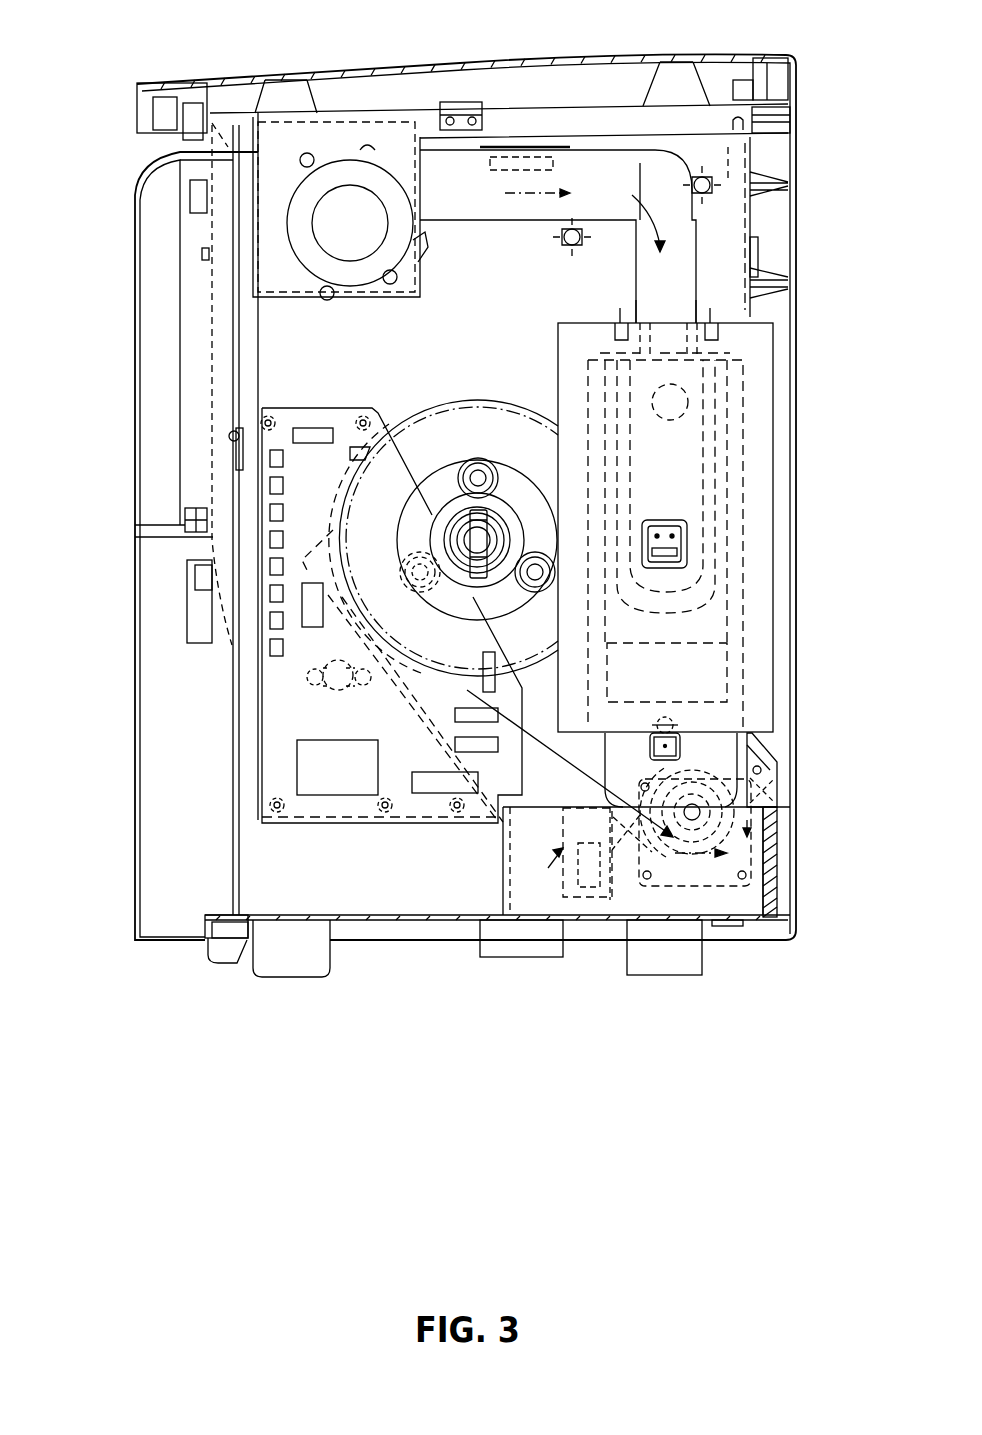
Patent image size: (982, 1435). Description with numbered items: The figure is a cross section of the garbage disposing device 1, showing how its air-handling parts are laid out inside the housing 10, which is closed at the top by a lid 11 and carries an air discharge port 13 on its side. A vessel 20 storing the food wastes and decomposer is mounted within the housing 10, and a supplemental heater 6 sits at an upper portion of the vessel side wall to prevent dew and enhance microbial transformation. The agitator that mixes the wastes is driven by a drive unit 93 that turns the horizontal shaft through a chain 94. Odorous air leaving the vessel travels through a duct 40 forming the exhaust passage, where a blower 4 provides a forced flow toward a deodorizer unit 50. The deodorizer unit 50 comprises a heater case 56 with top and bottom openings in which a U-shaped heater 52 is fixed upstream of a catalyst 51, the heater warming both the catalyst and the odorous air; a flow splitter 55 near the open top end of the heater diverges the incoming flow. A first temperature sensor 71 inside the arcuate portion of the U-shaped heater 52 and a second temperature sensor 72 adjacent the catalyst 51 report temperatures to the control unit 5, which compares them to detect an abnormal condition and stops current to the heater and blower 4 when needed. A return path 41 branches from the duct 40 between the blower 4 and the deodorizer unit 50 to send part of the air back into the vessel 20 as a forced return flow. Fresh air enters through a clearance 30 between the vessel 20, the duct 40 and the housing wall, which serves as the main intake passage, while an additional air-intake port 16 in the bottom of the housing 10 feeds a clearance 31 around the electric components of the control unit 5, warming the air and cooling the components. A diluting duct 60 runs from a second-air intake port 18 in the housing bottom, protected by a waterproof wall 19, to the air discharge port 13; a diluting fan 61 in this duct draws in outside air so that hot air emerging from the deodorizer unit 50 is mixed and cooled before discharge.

The garbage disposing device 1 is at (133, 306).
The blower 4 is at (363, 213).
The control unit 5 is at (317, 768).
The supplemental heater 6 is at (205, 348).
The housing 10 is at (133, 346).
The lid 11 is at (371, 73).
The air discharge port 13 is at (787, 853).
The additional air-intake port 16 is at (373, 923).
The second-air intake port 18 is at (528, 915).
The waterproof wall 19 is at (483, 940).
The vessel 20 is at (283, 350).
The clearance 30 is at (778, 405).
The clearance 31 is at (377, 710).
The duct 40 is at (623, 170).
The return path 41 is at (548, 152).
The deodorizer unit 50 is at (757, 698).
The catalyst 51 is at (707, 648).
The U-shaped heater 52 is at (716, 512).
The flow splitter 55 is at (683, 385).
The heater case 56 is at (730, 490).
The diluting duct 60 is at (640, 905).
The diluting fan 61 is at (583, 908).
The first temperature sensor 71 is at (680, 550).
The second temperature sensor 72 is at (683, 727).
The drive unit 93 is at (770, 783).
The chain 94 is at (480, 705).